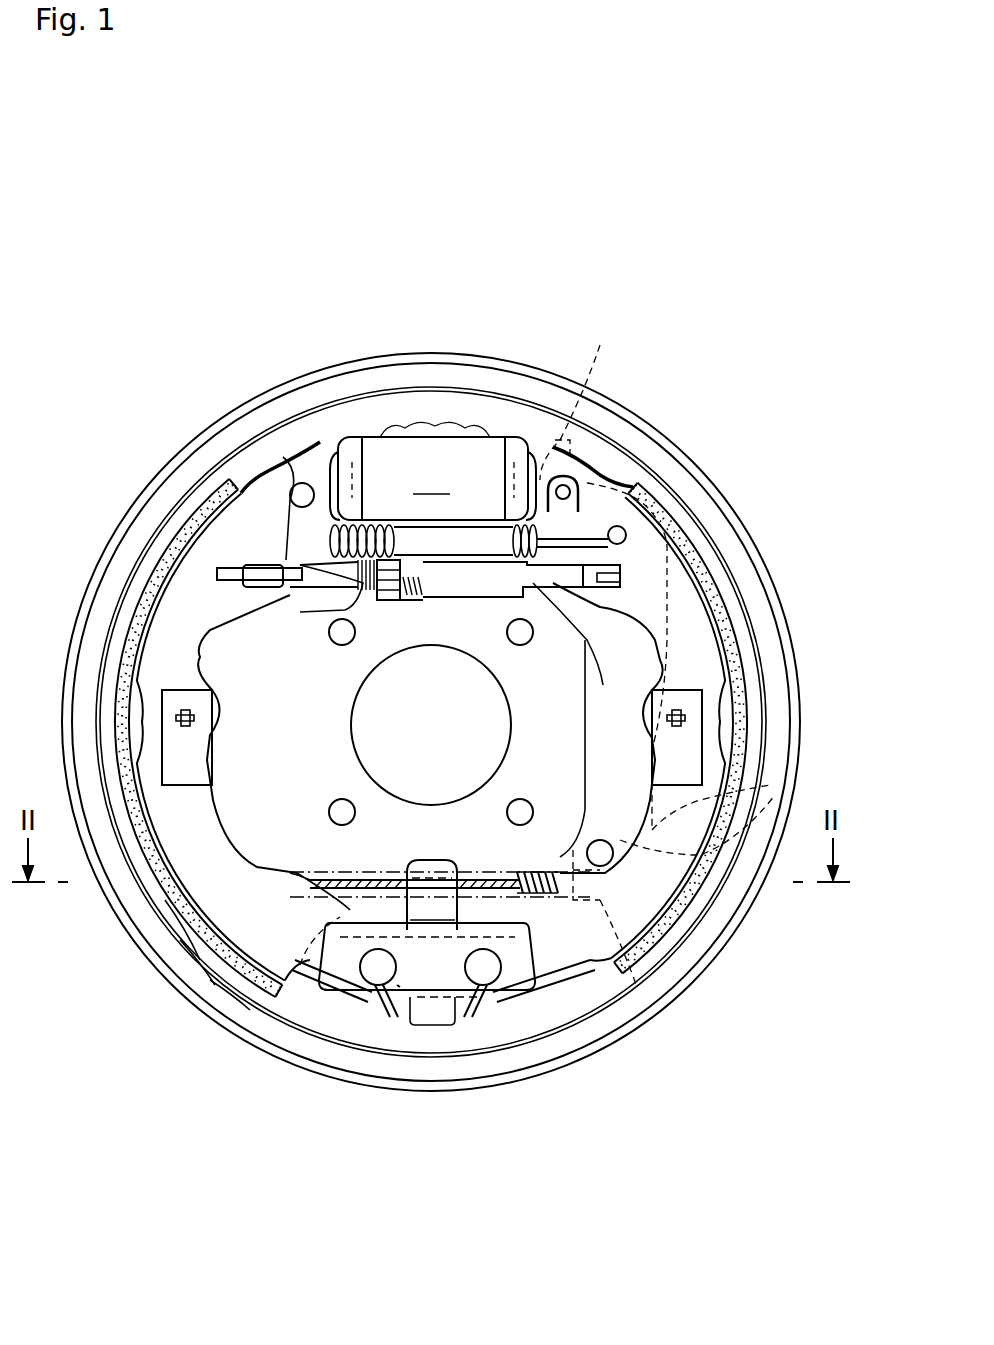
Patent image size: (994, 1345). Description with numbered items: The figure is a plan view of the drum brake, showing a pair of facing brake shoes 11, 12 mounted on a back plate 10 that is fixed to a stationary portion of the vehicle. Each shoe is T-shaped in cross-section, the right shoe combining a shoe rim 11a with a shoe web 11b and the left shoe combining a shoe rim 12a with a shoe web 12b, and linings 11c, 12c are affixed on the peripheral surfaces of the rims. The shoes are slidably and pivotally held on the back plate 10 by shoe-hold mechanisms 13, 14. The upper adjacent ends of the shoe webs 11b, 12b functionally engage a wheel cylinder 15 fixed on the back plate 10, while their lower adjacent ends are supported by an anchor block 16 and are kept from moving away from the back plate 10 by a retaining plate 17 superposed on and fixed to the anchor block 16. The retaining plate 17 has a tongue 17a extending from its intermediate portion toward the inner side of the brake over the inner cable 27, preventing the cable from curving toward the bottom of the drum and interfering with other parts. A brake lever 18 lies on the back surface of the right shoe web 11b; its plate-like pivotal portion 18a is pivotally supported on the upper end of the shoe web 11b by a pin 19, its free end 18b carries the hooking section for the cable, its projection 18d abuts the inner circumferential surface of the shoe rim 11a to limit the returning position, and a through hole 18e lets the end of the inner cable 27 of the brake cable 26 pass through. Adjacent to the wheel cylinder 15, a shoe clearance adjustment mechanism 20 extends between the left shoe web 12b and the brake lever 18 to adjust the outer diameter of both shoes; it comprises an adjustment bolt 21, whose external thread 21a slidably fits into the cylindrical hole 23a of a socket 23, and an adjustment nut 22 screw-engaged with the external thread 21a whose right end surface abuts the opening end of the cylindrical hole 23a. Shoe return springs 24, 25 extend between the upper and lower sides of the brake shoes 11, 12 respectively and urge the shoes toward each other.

The back plate 10 is at (497, 353).
The brake shoe 11 is at (617, 477).
The shoe rim 11a is at (640, 975).
The shoe web 11b is at (653, 977).
The lining 11c is at (680, 962).
The brake shoe 12 is at (257, 471).
The shoe rim 12a is at (232, 917).
The shoe web 12b is at (237, 910).
The lining 12c is at (232, 915).
The shoe-hold mechanism 13 is at (702, 741).
The shoe-hold mechanism 14 is at (160, 741).
The wheel cylinder 15 is at (433, 471).
The anchor block 16 is at (300, 965).
The retaining plate 17 is at (433, 980).
The tongue 17a is at (433, 858).
The brake lever 18 is at (603, 685).
The pivotal portion 18a is at (575, 420).
The free end 18b is at (637, 987).
The projection 18d is at (775, 790).
The through hole 18e is at (612, 853).
The pin 19 is at (567, 486).
The shoe clearance adjustment mechanism 20 is at (447, 603).
The adjustment bolt 21 is at (230, 566).
The external thread 21a is at (270, 607).
The adjustment nut 22 is at (385, 603).
The socket 23 is at (560, 580).
The cylindrical hole 23a is at (423, 603).
The shoe return spring 24 is at (335, 522).
The shoe return spring 25 is at (385, 1000).
The brake cable 26 is at (360, 866).
The inner cable 27 is at (540, 886).